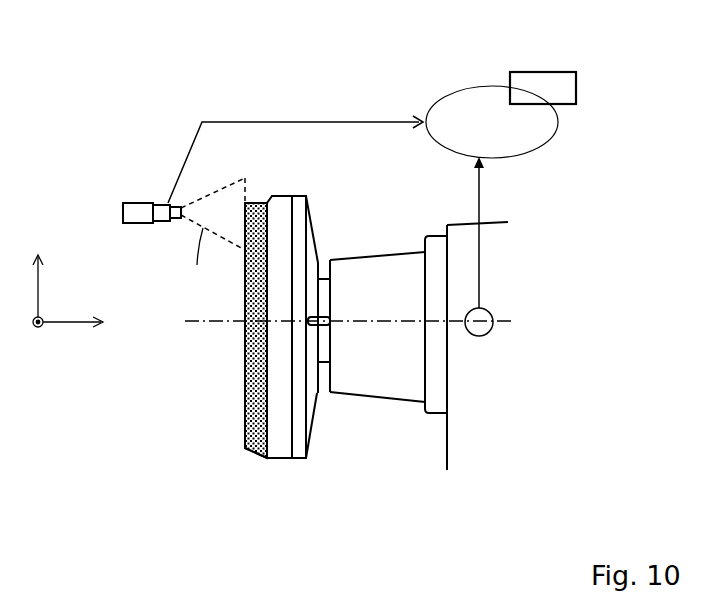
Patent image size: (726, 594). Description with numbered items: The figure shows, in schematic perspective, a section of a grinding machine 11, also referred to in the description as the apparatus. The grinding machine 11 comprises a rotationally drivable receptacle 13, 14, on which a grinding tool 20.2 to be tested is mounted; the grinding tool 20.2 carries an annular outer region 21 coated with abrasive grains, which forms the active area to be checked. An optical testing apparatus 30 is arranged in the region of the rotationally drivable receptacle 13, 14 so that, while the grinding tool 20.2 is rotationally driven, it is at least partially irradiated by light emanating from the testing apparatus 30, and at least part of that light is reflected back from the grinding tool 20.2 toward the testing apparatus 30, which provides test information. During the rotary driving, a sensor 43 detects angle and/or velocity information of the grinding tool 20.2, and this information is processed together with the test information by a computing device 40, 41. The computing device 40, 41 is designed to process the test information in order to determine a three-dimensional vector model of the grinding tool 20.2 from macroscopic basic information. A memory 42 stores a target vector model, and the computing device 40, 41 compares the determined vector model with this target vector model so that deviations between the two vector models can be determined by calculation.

The grinding machine 11 is at (97, 48).
The rotationally drivable receptacle 13 is at (322, 287).
The rotationally drivable receptacle 14 is at (384, 392).
The grinding tool 20.2 is at (264, 360).
The annular outer region 21 is at (243, 448).
The optical testing apparatus 30 is at (133, 173).
The computing device 40 is at (492, 122).
The computing device 41 is at (492, 122).
The memory 42 is at (543, 88).
The sensor 43 is at (480, 336).